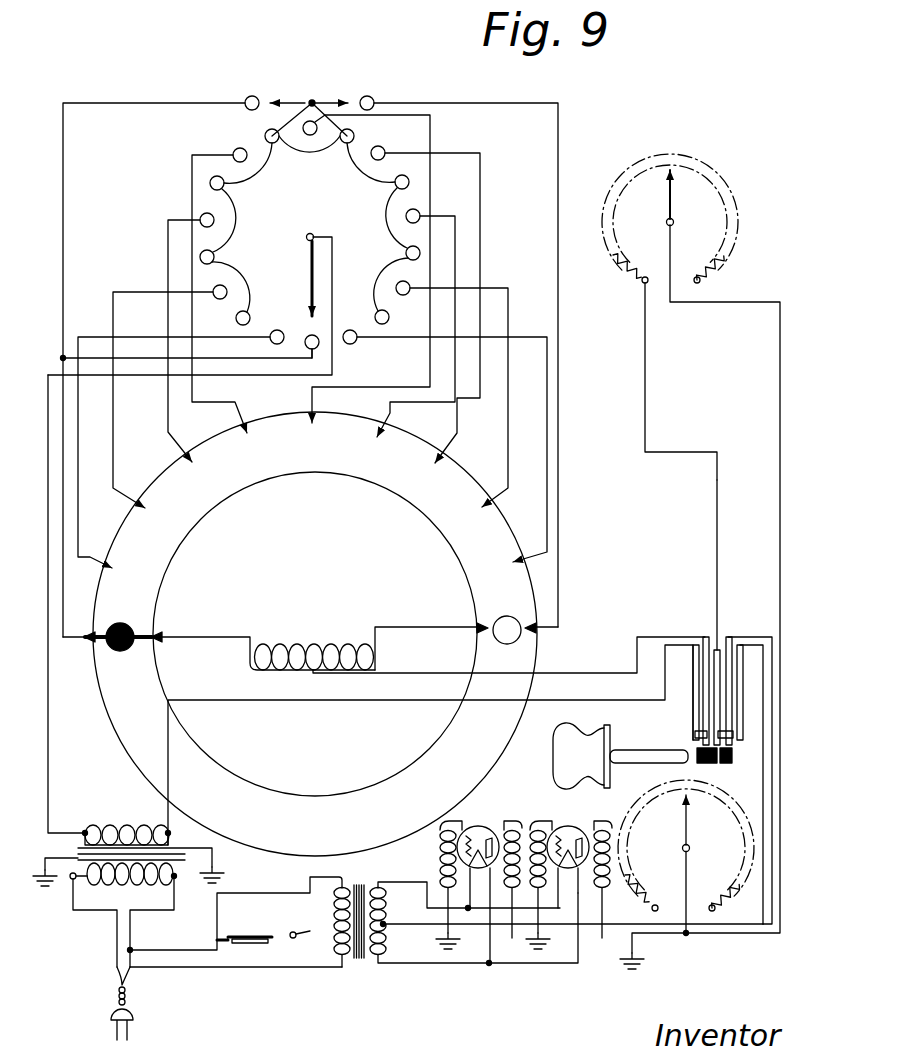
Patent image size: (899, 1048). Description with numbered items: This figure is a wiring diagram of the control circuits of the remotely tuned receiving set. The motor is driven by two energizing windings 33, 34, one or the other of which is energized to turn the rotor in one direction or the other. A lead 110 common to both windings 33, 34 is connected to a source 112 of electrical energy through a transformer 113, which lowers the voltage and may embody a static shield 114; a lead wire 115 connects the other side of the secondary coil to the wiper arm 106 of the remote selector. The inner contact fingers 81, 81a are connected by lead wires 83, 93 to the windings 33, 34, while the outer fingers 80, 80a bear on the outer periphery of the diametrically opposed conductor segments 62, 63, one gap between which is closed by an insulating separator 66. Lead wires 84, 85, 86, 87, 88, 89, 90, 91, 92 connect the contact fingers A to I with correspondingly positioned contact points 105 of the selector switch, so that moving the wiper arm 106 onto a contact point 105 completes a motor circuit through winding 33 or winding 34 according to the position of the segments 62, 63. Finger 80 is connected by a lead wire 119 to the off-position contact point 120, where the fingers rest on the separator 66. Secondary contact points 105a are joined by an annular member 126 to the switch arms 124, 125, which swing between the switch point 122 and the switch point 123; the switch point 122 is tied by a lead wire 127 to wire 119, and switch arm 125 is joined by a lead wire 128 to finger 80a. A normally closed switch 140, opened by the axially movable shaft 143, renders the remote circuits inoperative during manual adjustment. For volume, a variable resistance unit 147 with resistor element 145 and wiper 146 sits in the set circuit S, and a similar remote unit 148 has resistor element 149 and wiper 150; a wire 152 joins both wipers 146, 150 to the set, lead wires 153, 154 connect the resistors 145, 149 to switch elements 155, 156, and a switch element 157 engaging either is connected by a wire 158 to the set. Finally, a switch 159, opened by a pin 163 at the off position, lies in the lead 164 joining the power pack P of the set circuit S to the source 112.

The energizing winding 33 is at (284, 644).
The energizing winding 34 is at (340, 644).
The conductor segment 62 is at (322, 474).
The conductor segment 63 is at (298, 797).
The insulating separator 66 is at (122, 624).
The spring finger 80 is at (93, 630).
The spring finger 80a is at (532, 620).
The spring finger 81 is at (156, 628).
The spring finger 81a is at (483, 620).
The lead wire 83 is at (226, 633).
The lead wire 84 is at (90, 552).
The lead wire 85 is at (120, 490).
The lead wire 86 is at (178, 444).
The lead wire 87 is at (243, 405).
The lead wire 88 is at (318, 401).
The lead wire 89 is at (392, 410).
The lead wire 90 is at (457, 444).
The lead wire 91 is at (510, 495).
The lead wire 92 is at (550, 560).
The lead wire 93 is at (421, 624).
The contact point 105 is at (200, 217).
The secondary contact point 105a is at (209, 184).
The wiper arm 106 is at (311, 278).
The lead 110 is at (430, 697).
The source of electrical energy 112 is at (131, 1019).
The transformer 113 is at (184, 882).
The static shield 114 is at (218, 866).
The lead wire 115 is at (47, 548).
The lead wire 119 is at (66, 645).
The contact point 120 is at (314, 350).
The switch point 122 is at (252, 95).
The contact 123 is at (370, 96).
The switch arm 124 is at (302, 102).
The switch arm 125 is at (340, 102).
The annular member 126 is at (247, 223).
The lead wire 127 is at (64, 229).
The lead wire 128 is at (559, 172).
The switch 140 is at (690, 708).
The shaft 143 is at (627, 750).
The resistor element 145 is at (720, 898).
The wiper 146 is at (556, 742).
The variable resistance unit 147 is at (624, 805).
The variable resistance unit 148 is at (616, 272).
The resistor element 149 is at (731, 264).
The wiper 150 is at (672, 192).
The wire 152 is at (779, 343).
The lead wire 153 is at (752, 645).
The lead wire 154 is at (718, 492).
The switch element 155 is at (738, 740).
The switch element 156 is at (716, 637).
The switch element 157 is at (742, 765).
The wire 158 is at (731, 636).
The switch 159 is at (252, 933).
The pin 163 is at (305, 938).
The lead 164 is at (198, 972).
The power pack P is at (361, 966).
The receiving set circuit S is at (584, 966).